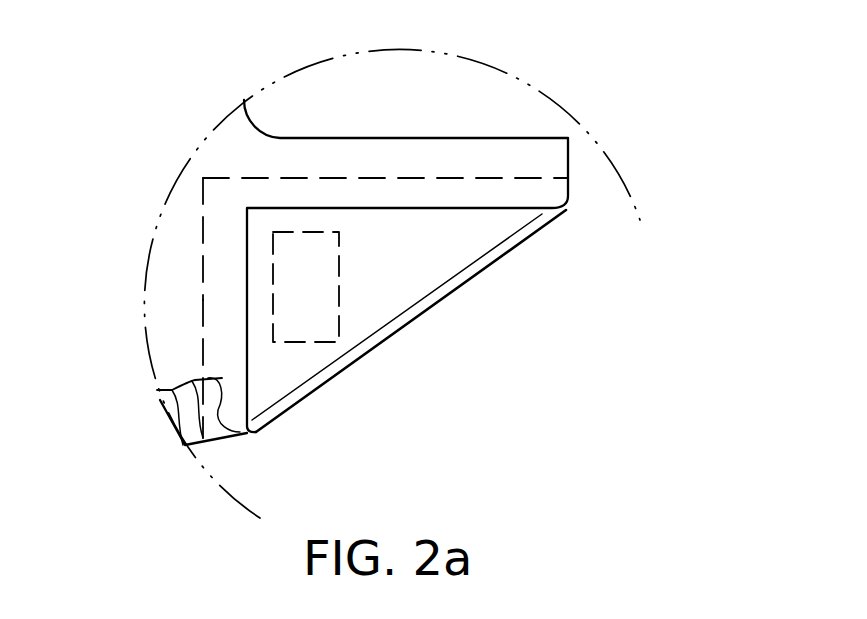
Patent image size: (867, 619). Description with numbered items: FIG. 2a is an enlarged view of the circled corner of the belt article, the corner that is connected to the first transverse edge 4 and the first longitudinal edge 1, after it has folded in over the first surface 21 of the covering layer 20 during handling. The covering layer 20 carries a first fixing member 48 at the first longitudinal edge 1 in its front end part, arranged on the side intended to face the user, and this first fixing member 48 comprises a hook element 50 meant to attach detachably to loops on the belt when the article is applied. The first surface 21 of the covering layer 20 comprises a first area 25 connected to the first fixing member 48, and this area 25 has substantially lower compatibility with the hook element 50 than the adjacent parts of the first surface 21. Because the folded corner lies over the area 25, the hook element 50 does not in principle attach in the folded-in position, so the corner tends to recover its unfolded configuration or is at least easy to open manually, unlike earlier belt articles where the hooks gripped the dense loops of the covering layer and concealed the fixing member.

The first longitudinal edge 1 is at (570, 154).
The first area 25 is at (445, 177).
The covering layer 20 is at (170, 240).
The first surface 21 is at (170, 317).
The first transverse edge 4 is at (218, 438).
The first fixing member 48 is at (322, 260).
The hook element 50 is at (322, 323).